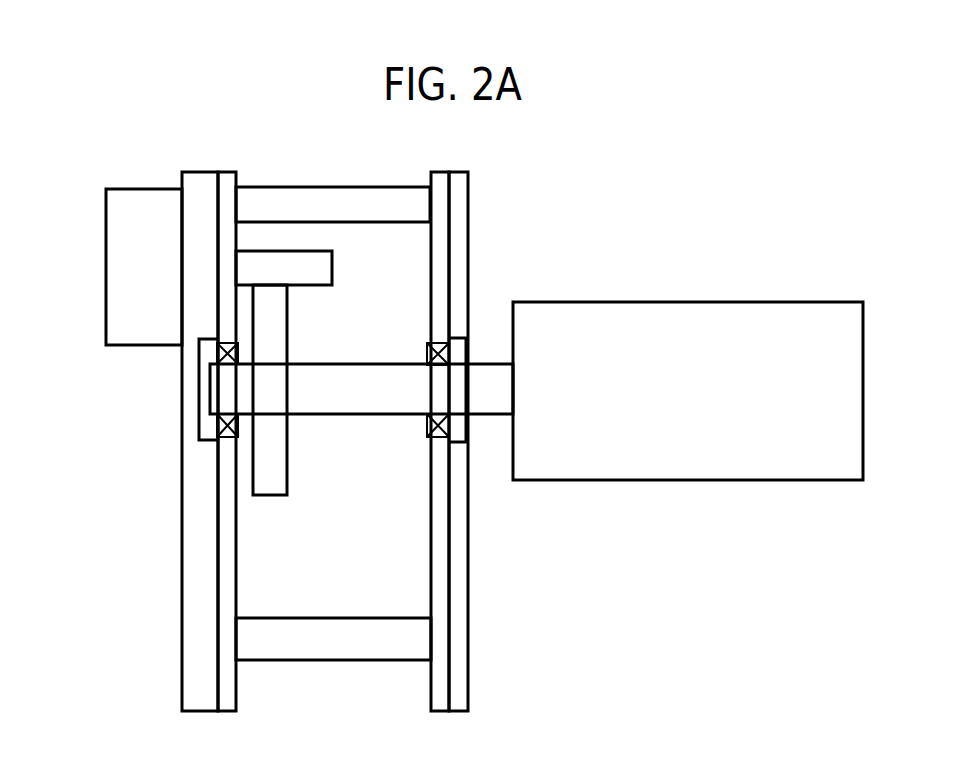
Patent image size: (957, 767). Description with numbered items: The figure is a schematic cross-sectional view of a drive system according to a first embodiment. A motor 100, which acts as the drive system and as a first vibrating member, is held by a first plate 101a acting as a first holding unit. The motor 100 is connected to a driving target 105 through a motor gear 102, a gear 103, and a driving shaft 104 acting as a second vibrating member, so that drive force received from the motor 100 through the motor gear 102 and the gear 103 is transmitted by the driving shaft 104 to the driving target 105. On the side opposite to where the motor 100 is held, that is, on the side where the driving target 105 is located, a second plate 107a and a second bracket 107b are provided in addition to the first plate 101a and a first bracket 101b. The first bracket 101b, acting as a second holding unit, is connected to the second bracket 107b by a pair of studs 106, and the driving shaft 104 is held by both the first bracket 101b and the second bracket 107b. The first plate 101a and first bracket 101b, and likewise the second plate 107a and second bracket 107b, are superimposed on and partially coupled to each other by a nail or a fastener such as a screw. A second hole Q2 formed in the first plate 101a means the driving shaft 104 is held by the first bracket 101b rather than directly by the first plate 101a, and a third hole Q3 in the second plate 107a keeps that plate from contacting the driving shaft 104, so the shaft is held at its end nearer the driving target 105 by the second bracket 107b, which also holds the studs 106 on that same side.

The motor 100 is at (118, 270).
The first plate 101a is at (195, 566).
The first bracket 101b is at (226, 579).
The motor gear 102 is at (320, 268).
The gear 103 is at (275, 471).
The driving shaft 104 is at (345, 378).
The driving target 105 is at (686, 310).
The studs 106 is at (333, 190).
The second plate 107a is at (460, 576).
The second bracket 107b is at (440, 534).
The second hole Q2 is at (205, 395).
The third hole Q3 is at (466, 345).